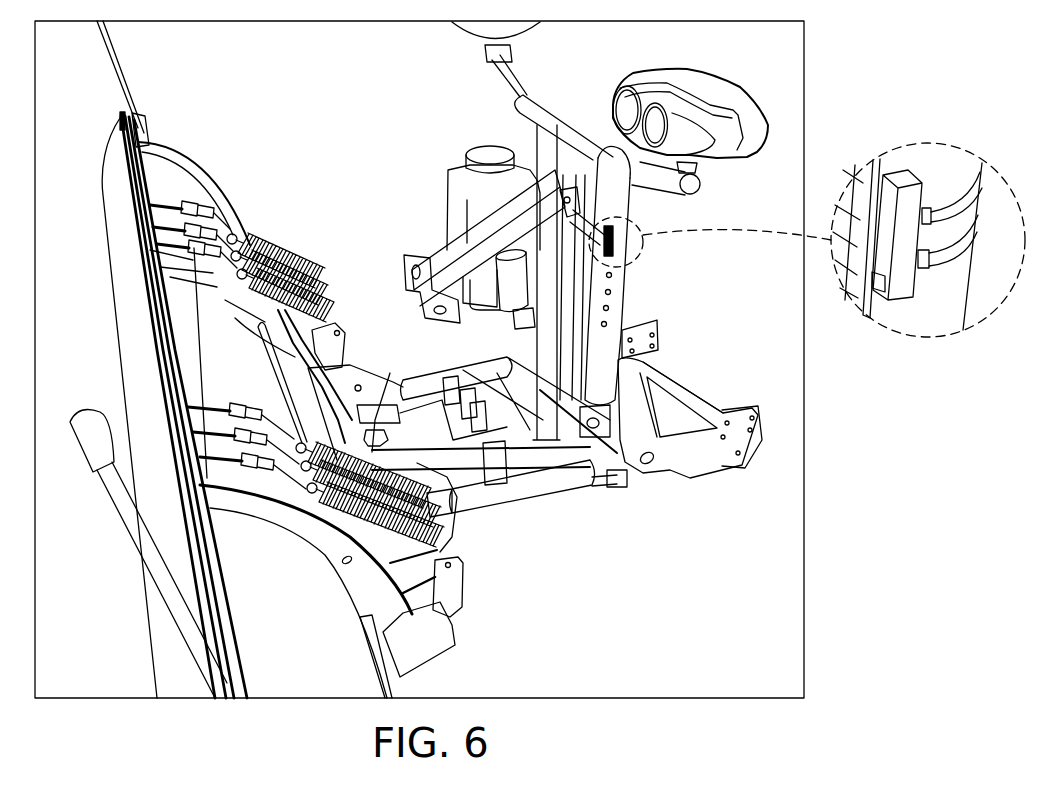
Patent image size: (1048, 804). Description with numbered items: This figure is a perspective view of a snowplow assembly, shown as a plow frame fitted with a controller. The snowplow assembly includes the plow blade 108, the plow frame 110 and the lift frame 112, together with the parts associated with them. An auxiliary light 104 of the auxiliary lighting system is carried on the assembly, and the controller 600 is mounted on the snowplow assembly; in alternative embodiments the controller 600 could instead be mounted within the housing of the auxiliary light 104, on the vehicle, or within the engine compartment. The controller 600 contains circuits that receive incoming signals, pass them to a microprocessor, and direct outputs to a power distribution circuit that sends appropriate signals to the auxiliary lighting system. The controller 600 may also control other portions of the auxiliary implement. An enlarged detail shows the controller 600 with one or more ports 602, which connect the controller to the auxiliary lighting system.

The auxiliary light 104 is at (697, 80).
The plow blade 108 is at (187, 193).
The plow frame 110 is at (423, 423).
The lift frame 112 is at (627, 278).
The controller 600 is at (915, 200).
The ports 602 is at (923, 228).